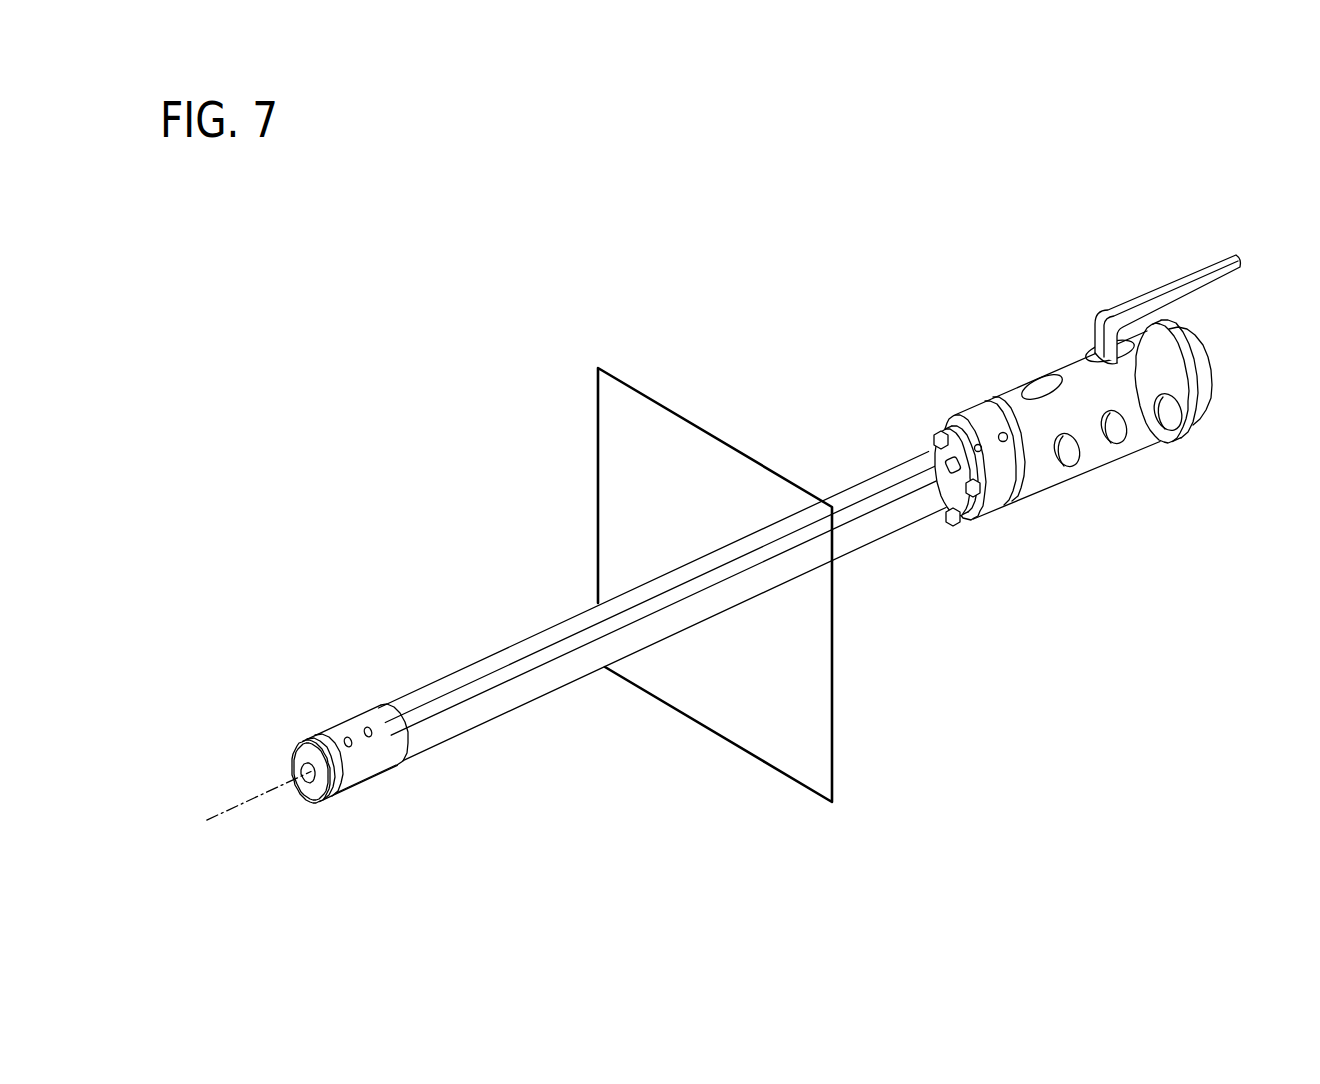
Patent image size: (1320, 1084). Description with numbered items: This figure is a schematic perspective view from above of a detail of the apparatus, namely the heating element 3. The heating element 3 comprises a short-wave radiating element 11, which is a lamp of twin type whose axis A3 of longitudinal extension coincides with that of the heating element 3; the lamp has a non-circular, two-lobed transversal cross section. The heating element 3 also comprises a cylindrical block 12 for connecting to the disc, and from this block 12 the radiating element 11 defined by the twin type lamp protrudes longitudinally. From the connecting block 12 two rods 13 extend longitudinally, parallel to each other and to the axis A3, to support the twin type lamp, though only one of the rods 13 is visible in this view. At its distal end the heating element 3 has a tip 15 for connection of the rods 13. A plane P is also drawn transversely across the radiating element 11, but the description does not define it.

The heating element 3 is at (740, 545).
The radiating element 11 is at (490, 745).
The cylindrical block 12 is at (994, 380).
The rods 13 is at (888, 516).
The tip 15 is at (342, 698).
The plane P is at (633, 388).
The axis of longitudinal extension A3 is at (242, 806).